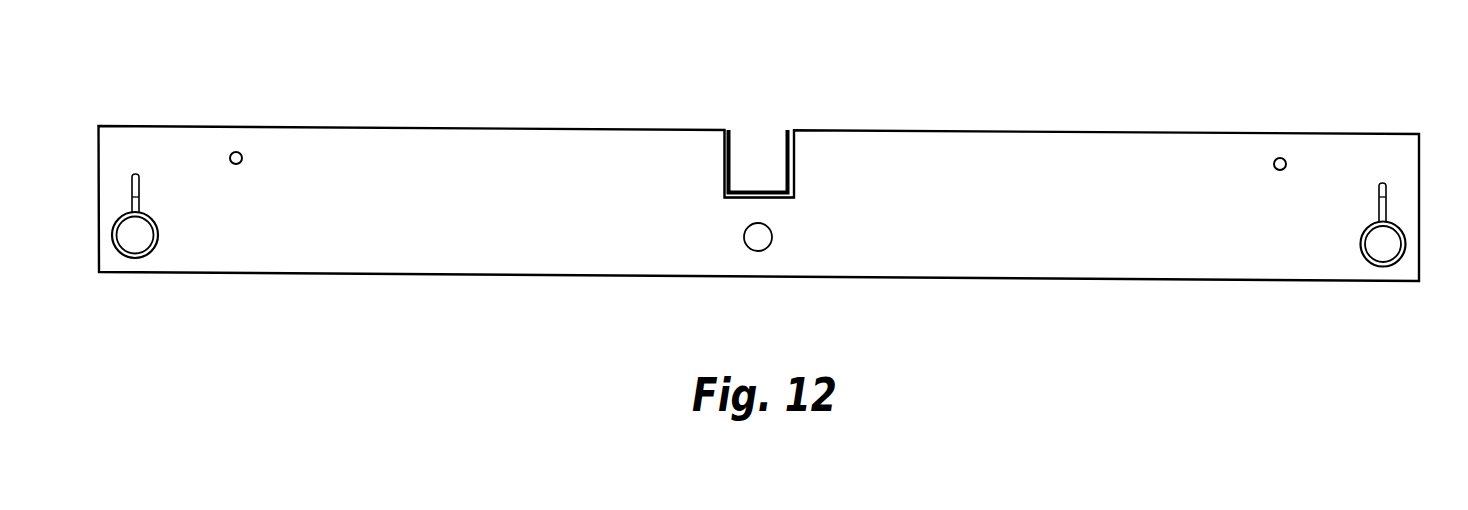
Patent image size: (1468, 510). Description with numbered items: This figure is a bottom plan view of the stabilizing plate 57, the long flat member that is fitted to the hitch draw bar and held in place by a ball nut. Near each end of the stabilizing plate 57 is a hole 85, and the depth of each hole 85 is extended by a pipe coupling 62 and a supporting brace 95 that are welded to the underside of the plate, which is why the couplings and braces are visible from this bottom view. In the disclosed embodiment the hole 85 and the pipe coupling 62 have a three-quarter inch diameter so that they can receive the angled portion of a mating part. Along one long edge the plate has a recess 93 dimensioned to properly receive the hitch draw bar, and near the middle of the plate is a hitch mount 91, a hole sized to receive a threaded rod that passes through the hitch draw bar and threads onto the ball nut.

The stabilizing plate 57 is at (420, 163).
The recess 93 is at (732, 153).
The hitch mount 91 is at (753, 240).
The pipe coupling 62 is at (160, 237).
The supporting brace 95 is at (140, 187).
The hole 85 is at (133, 240).